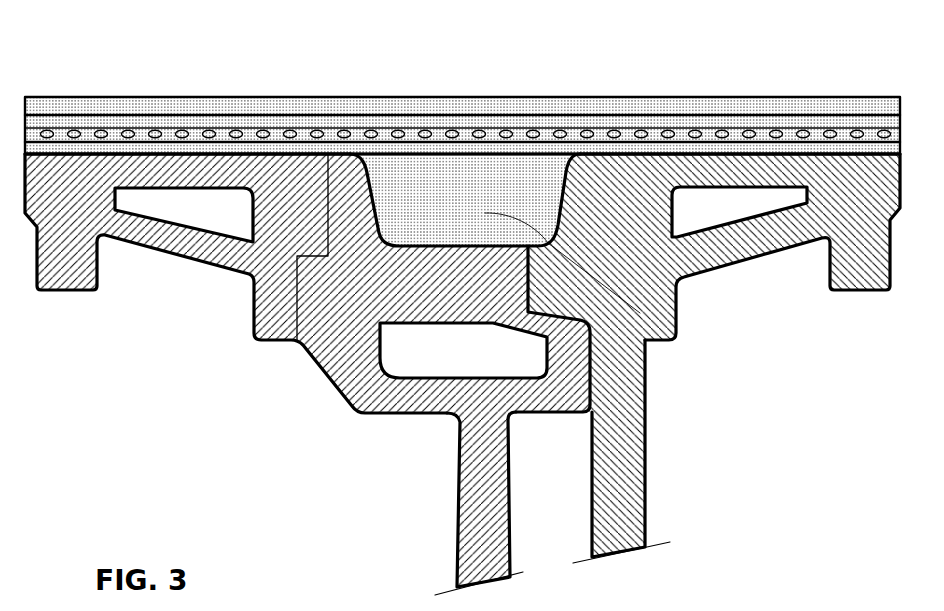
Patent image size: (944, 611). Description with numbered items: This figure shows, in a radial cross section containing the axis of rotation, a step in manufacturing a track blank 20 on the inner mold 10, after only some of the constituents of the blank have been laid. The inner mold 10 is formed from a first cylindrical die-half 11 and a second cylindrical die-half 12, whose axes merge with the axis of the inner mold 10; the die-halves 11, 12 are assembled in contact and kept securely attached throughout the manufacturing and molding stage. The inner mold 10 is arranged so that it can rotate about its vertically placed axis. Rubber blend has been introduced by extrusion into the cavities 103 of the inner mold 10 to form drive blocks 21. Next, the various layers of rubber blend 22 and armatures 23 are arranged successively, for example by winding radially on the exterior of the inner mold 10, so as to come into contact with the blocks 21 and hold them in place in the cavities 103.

The track blank 20 is at (220, 126).
The layers of rubber blend 22 is at (369, 134).
The armatures 23 is at (480, 128).
The inner mold 10 is at (277, 305).
The cavities 103 is at (433, 218).
The second cylindrical die-half 12 is at (348, 397).
The drive blocks 21 is at (670, 342).
The first cylindrical die-half 11 is at (620, 440).